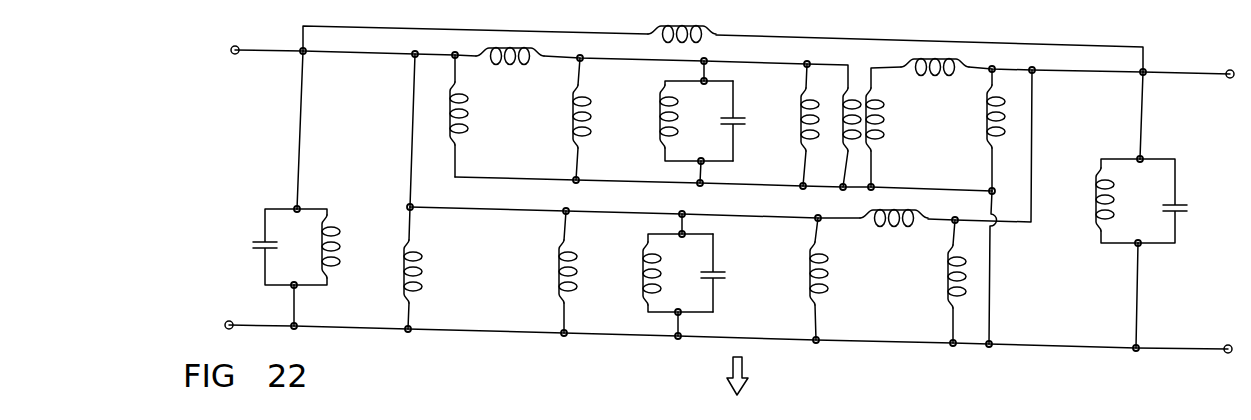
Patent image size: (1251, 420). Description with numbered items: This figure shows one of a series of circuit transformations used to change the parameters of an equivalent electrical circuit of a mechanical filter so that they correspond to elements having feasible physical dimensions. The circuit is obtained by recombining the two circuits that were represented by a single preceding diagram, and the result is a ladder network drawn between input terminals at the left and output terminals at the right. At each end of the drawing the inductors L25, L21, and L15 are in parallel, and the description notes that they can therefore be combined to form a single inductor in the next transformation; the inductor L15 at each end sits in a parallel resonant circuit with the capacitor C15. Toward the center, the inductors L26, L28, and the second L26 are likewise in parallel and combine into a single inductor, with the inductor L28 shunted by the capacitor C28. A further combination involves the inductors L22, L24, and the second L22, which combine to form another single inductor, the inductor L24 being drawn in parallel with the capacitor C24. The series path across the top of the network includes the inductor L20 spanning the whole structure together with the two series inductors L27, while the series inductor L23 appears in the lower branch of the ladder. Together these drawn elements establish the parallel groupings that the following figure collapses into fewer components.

The series inductor L20 is at (723, 40).
The inductor L21 is at (685, 275).
The inductor L22 is at (706, 275).
The series inductor L23 is at (698, 231).
The inductor L24 is at (678, 273).
The capacitor C24 of parallel resonant circuit C24 is at (729, 273).
The inductor L25 is at (727, 123).
The inductor L26 is at (674, 122).
The series inductor L27 is at (722, 75).
The inductor L28 is at (678, 121).
The capacitor C28 of parallel resonant circuit C28 is at (716, 121).
The inductor L15 is at (717, 222).
The capacitor C15 of parallel resonant circuit C15 is at (736, 222).